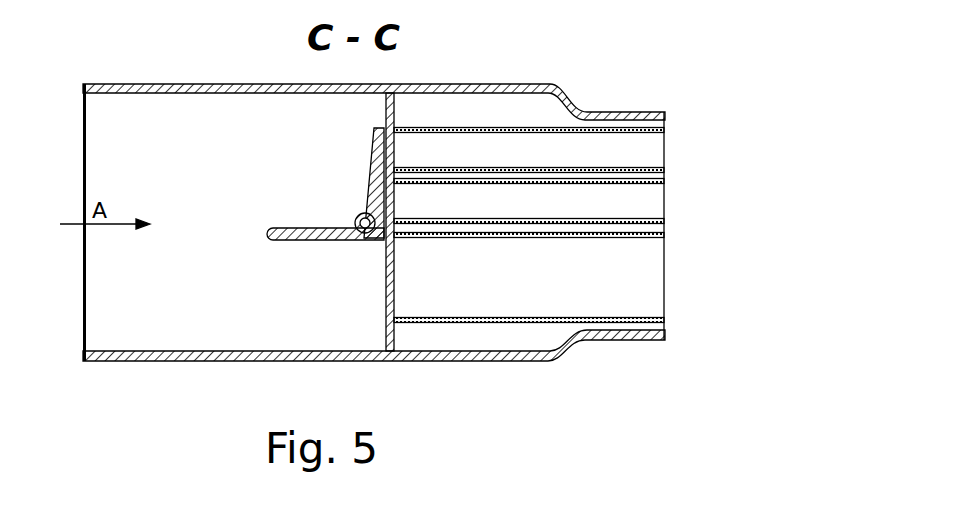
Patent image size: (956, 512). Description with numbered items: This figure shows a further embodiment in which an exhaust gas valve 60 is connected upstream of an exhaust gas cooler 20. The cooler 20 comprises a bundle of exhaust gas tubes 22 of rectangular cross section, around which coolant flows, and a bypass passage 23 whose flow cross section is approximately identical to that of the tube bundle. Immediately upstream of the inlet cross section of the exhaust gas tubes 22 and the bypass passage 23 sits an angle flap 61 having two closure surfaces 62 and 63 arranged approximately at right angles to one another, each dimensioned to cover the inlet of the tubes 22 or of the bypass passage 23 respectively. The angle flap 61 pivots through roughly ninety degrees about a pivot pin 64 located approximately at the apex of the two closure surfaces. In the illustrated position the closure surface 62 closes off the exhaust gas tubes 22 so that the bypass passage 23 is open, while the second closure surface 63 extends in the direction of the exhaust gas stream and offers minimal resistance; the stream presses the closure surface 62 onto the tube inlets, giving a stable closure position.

The exhaust gas cooler 20 is at (478, 83).
The exhaust gas tubes 22 is at (627, 200).
The bypass passage 23 is at (507, 302).
The exhaust gas valve 60 is at (168, 315).
The angle flap 61 is at (317, 219).
The closure surface 62 is at (377, 162).
The closure surface 63 is at (308, 243).
The pivot pin 64 is at (362, 245).